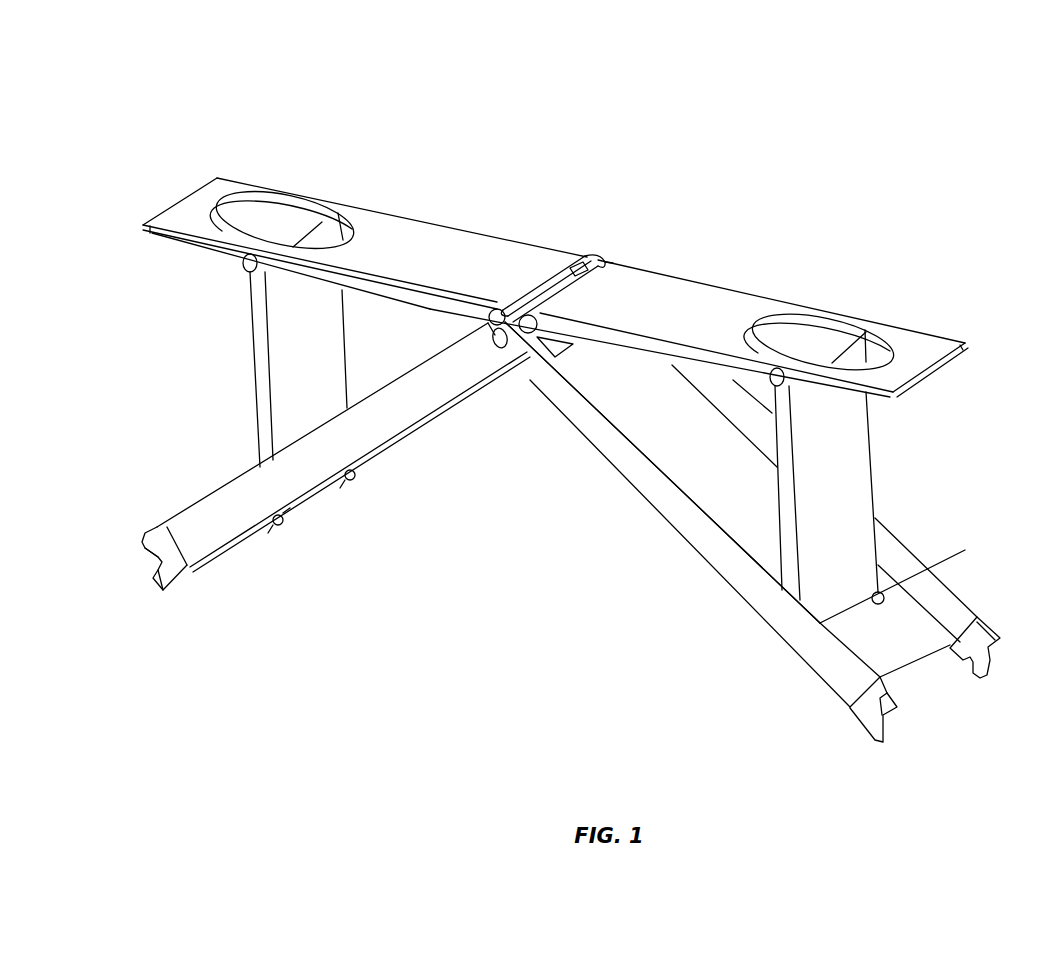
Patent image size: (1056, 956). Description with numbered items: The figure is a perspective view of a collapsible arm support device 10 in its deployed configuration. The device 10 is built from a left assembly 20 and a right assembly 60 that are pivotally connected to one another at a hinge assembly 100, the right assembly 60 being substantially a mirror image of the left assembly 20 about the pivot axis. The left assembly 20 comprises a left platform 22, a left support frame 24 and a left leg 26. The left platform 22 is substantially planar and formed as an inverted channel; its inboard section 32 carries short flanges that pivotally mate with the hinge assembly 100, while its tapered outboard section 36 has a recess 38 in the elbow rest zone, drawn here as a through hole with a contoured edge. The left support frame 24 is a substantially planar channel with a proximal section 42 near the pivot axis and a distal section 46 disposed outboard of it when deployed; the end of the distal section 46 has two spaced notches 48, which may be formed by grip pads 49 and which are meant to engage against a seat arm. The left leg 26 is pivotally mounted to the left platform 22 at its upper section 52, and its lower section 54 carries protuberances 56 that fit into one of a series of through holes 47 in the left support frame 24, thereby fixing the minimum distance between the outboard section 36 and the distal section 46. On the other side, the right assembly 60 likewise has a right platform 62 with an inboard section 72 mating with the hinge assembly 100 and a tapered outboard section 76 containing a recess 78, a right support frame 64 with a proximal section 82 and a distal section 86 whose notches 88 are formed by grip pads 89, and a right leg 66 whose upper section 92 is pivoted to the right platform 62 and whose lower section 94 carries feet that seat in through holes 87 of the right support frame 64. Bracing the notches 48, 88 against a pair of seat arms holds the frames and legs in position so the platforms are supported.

The collapsible arm support device 10 is at (835, 71).
The left assembly 20 is at (480, 128).
The left platform 22 is at (403, 240).
The left support frame 24 is at (405, 412).
The left leg 26 is at (258, 368).
The inboard section 32 is at (545, 265).
The outboard section 36 is at (183, 210).
The recess 38 is at (243, 202).
The proximal section 42 is at (480, 370).
The distal section 46 is at (197, 543).
The through holes 47 is at (283, 513).
The notches 48 is at (155, 562).
The grip pads 49 is at (170, 562).
The upper section 52 is at (280, 285).
The lower section 54 is at (288, 433).
The protuberances 56 is at (352, 480).
The right assembly 60 is at (892, 233).
The right platform 62 is at (735, 310).
The right support frame 64 is at (720, 485).
The right leg 66 is at (845, 497).
The inboard section 72 is at (613, 287).
The outboard section 76 is at (950, 340).
The recess 78 is at (878, 336).
The proximal section 82 is at (585, 363).
The distal section 86 is at (888, 655).
The through holes 87 is at (927, 570).
The notches 88 is at (893, 720).
The grip pads 89 is at (877, 700).
The upper section 92 is at (850, 408).
The lower section 94 is at (877, 563).
The hinge assembly 100 is at (603, 228).